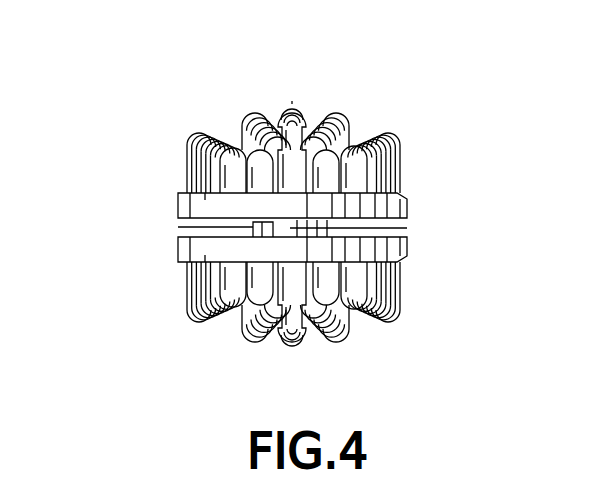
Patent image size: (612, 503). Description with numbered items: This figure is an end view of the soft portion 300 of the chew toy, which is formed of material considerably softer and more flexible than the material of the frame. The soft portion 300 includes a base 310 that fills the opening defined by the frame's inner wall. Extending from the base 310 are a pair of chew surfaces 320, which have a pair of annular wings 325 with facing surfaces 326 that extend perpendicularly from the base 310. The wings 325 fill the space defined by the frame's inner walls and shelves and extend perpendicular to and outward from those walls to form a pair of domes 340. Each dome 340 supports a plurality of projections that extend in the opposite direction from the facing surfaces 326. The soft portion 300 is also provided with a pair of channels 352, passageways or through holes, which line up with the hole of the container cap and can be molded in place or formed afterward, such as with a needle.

The soft portion 300 is at (445, 209).
The base 310 is at (400, 233).
The chew surfaces 320 is at (212, 101).
The annular wings 325 is at (185, 206).
The facing surfaces 326 is at (253, 233).
The domes 340 is at (381, 340).
The channels 352 is at (293, 100).